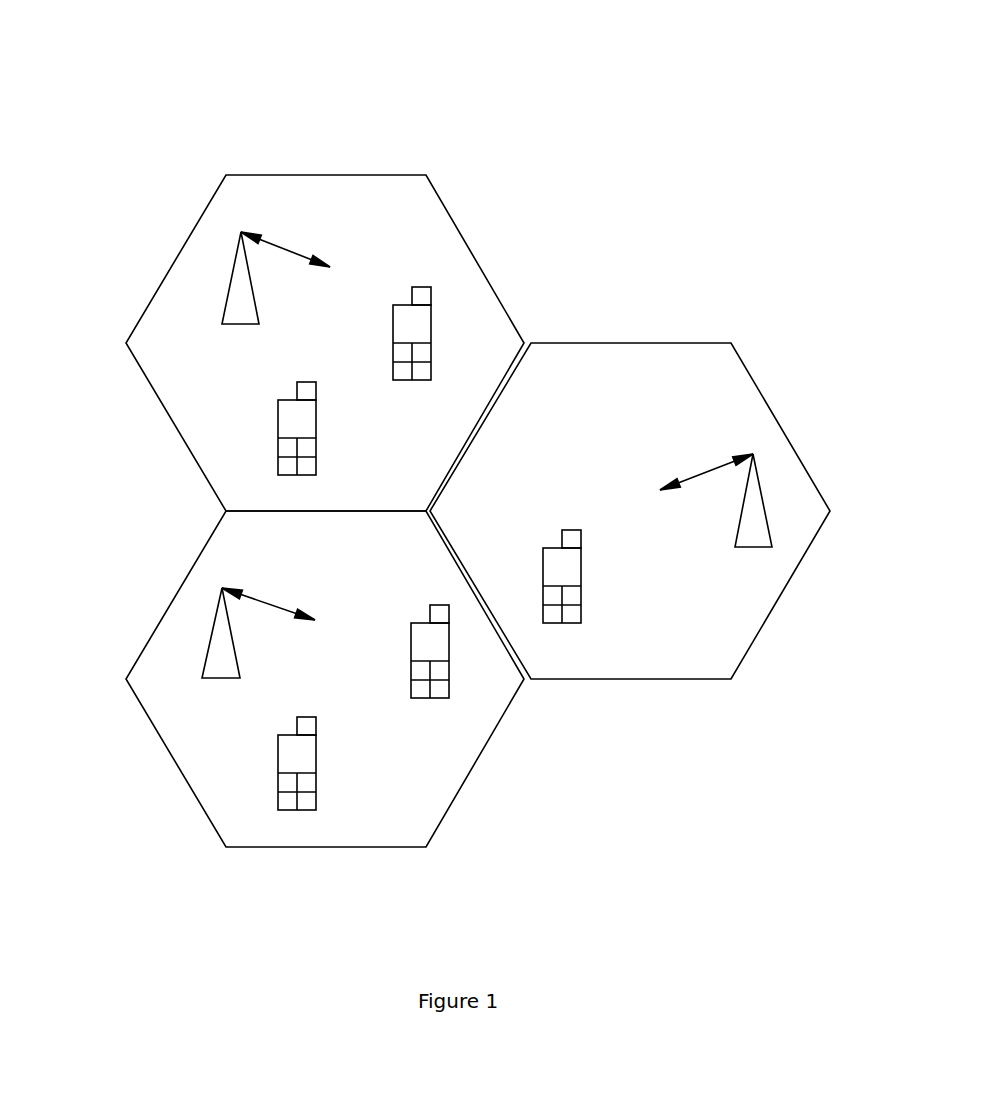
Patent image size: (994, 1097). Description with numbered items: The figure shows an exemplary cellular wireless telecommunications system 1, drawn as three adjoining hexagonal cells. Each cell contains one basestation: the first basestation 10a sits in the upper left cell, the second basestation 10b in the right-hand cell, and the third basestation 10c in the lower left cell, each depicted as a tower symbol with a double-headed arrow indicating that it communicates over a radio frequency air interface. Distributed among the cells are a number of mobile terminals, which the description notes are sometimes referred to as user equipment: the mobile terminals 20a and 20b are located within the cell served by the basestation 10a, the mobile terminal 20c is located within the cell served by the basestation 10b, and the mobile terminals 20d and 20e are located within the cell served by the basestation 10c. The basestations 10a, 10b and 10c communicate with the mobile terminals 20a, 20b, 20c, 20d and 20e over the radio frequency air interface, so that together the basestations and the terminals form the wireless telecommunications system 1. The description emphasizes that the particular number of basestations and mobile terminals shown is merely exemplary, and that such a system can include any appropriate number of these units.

The wireless telecommunications system 1 is at (582, 155).
The basestation 10a is at (220, 307).
The basestation 10b is at (772, 510).
The basestation 10c is at (202, 660).
The mobile terminal 20a is at (431, 324).
The mobile terminal 20b is at (278, 420).
The mobile terminal 20c is at (581, 623).
The mobile terminal 20d is at (449, 698).
The mobile terminal 20e is at (297, 773).